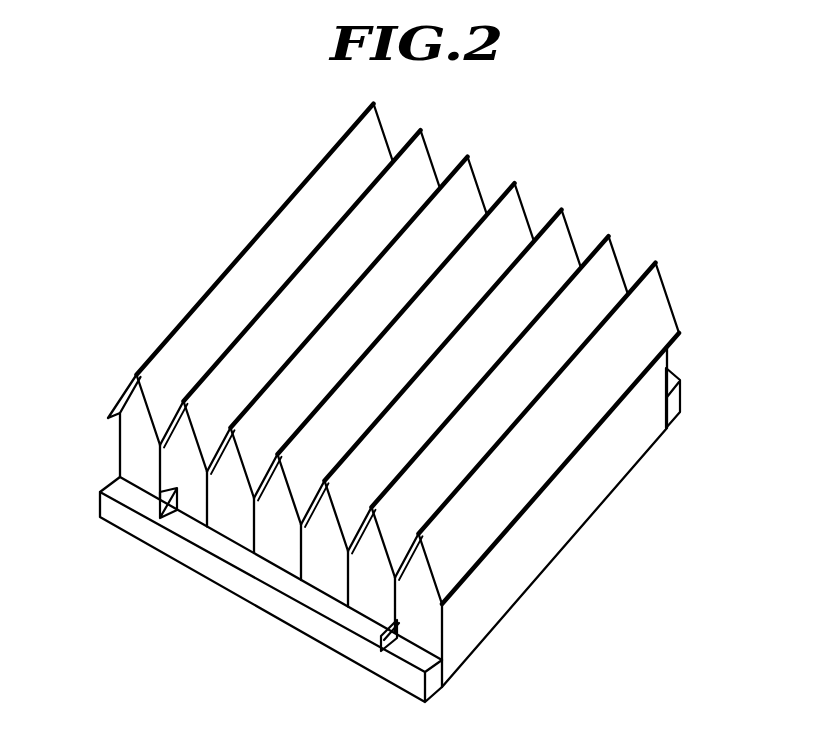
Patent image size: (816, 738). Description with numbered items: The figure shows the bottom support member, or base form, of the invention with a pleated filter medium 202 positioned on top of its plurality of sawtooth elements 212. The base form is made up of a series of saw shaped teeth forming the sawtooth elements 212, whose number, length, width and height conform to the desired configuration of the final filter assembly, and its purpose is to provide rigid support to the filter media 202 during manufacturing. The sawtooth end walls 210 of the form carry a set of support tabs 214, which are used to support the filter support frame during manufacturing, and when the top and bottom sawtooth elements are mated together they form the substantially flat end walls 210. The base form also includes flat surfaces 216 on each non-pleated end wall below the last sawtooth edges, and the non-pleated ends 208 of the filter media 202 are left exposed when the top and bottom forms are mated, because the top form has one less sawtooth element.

The pleated filter medium 202 is at (552, 247).
The non-pleated ends 208 is at (118, 400).
The sawtooth end walls 210 is at (473, 173).
The sawtooth elements 212 is at (275, 500).
The support tabs 214 is at (158, 503).
The flat surfaces 216 is at (558, 523).